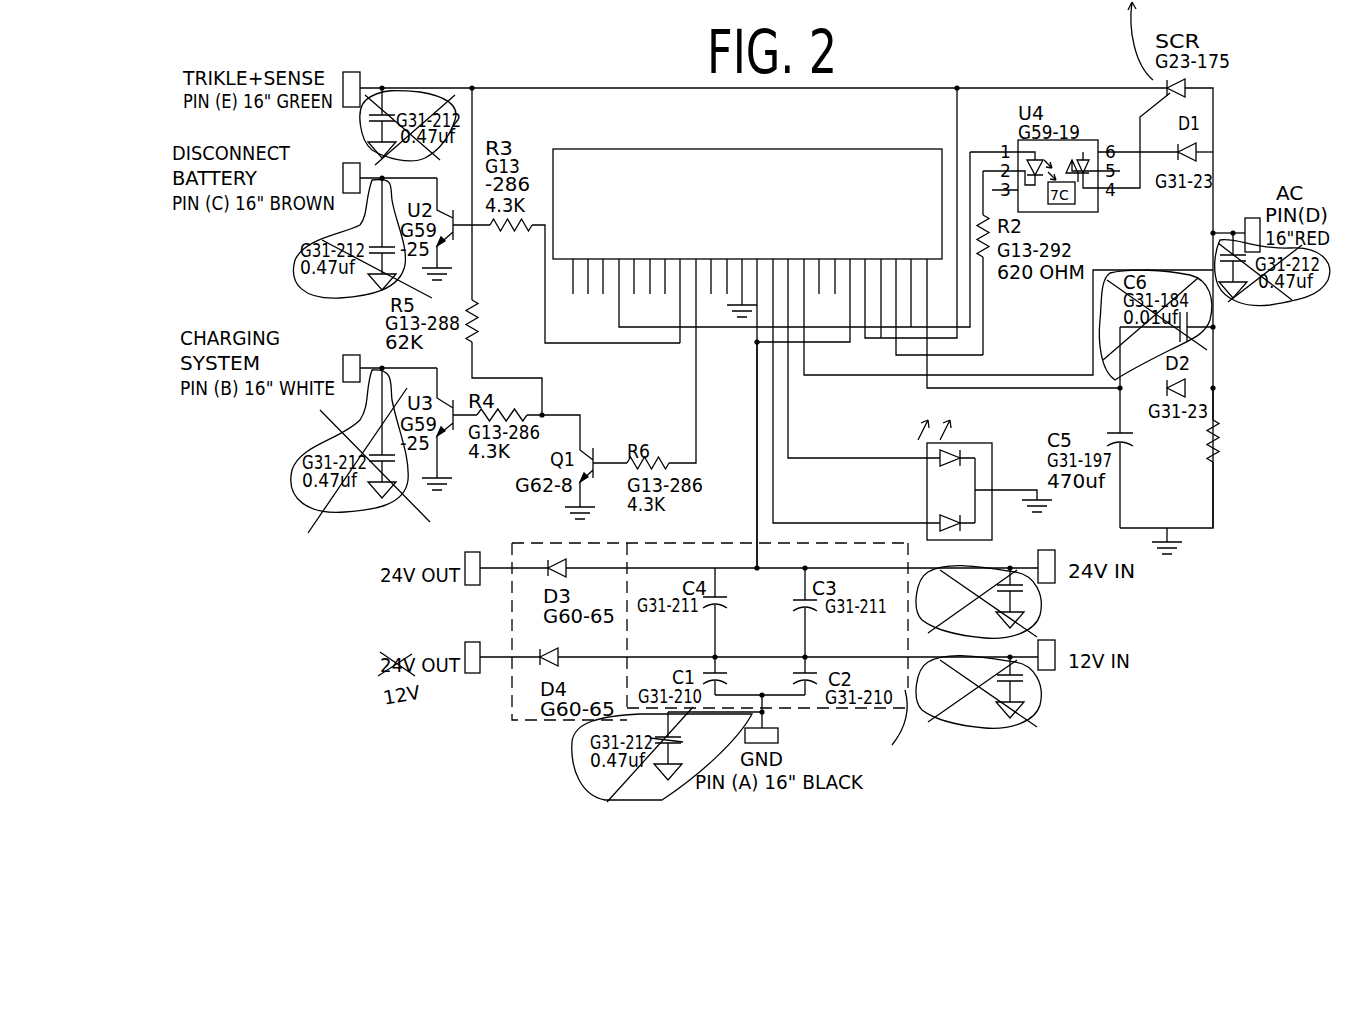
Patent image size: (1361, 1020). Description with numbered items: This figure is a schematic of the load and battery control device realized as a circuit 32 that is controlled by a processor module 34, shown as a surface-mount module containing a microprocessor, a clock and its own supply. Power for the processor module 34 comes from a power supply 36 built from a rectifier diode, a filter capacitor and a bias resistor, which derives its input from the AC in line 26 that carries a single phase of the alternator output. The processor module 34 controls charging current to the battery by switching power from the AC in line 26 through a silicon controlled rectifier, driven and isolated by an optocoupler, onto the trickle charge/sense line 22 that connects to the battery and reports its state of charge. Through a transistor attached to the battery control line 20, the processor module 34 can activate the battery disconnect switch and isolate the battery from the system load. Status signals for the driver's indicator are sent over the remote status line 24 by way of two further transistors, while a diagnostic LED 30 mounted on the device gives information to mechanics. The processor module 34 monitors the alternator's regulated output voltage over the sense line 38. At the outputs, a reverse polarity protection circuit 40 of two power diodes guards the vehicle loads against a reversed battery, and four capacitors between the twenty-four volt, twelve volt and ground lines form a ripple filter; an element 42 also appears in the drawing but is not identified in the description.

The battery control line 20 is at (340, 180).
The trickle charge/sense line 22 is at (357, 90).
The remote status line 24 is at (341, 358).
The AC in line 26 is at (1251, 216).
The LED 30 is at (990, 446).
The circuit 32 is at (598, 44).
The processor module 34 is at (593, 232).
The power supply 36 is at (1170, 472).
The sense line 38 is at (755, 490).
The reverse polarity protection circuit 40 is at (514, 710).
The input filter capacitors 42 is at (940, 723).